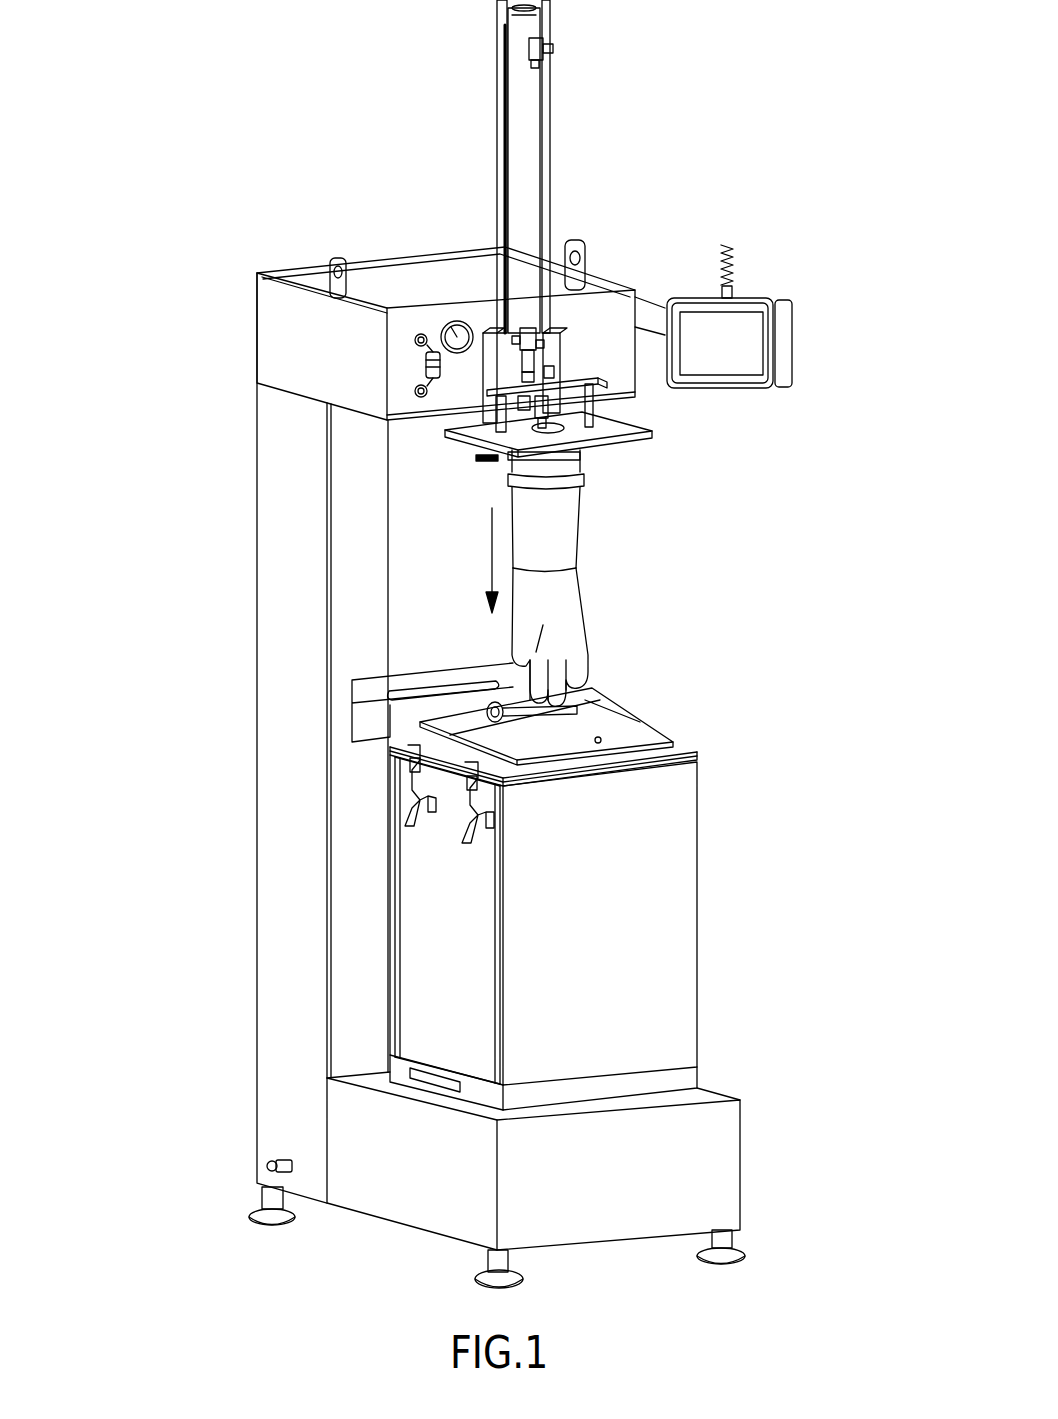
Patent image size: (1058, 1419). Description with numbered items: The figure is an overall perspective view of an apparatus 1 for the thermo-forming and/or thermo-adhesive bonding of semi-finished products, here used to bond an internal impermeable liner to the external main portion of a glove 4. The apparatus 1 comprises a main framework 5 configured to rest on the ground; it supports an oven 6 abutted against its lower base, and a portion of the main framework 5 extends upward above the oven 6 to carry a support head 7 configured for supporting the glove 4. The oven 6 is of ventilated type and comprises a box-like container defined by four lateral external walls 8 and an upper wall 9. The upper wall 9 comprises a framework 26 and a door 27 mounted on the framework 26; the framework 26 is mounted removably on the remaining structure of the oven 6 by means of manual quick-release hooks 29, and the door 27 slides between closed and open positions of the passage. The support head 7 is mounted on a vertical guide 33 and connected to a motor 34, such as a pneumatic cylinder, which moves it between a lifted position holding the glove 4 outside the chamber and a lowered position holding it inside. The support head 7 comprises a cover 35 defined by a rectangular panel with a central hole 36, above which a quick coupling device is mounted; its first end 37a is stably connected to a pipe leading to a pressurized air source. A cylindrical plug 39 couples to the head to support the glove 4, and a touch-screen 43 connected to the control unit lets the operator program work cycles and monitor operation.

The apparatus 1 is at (148, 158).
The glove 4 is at (597, 565).
The main framework 5 is at (238, 436).
The oven 6 is at (698, 913).
The support head 7 is at (677, 455).
The lateral external walls 8 is at (430, 898).
The upper wall 9 is at (450, 748).
The framework 26 is at (685, 743).
The door 27 is at (577, 722).
The hooks 29 is at (463, 820).
The vertical guide 33 is at (550, 125).
The motor 34 is at (533, 175).
The cover 35 is at (617, 428).
The central hole 36 is at (567, 423).
The first end 37a is at (553, 378).
The plug 39 is at (477, 457).
The touch-screen 43 is at (793, 333).